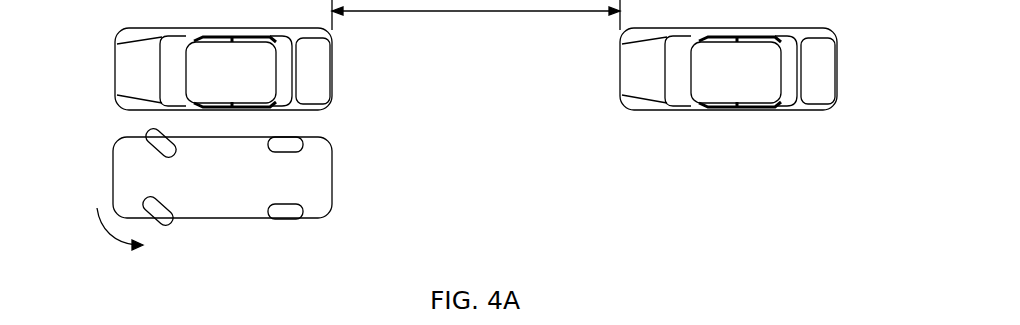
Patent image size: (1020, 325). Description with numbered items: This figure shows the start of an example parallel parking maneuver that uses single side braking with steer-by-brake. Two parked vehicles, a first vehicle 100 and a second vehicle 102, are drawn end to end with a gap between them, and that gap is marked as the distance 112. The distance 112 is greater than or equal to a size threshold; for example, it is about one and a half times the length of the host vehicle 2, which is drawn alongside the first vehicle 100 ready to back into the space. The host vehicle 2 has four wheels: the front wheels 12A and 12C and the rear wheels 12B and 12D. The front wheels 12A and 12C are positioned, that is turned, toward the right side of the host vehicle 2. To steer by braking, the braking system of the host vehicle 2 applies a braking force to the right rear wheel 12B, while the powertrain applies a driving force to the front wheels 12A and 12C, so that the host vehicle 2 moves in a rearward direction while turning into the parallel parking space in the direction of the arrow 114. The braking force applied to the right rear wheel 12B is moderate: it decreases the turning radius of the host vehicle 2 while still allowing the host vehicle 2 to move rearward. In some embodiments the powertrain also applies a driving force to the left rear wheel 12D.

The first vehicle 100 is at (125, 72).
The second vehicle 102 is at (828, 65).
The distance 112 is at (477, 12).
The host vehicle 2 is at (125, 180).
The front wheel 12A is at (160, 142).
The right rear wheel 12B is at (290, 143).
The front wheel 12C is at (158, 212).
The left rear wheel 12D is at (288, 213).
The arrow 114 is at (108, 237).